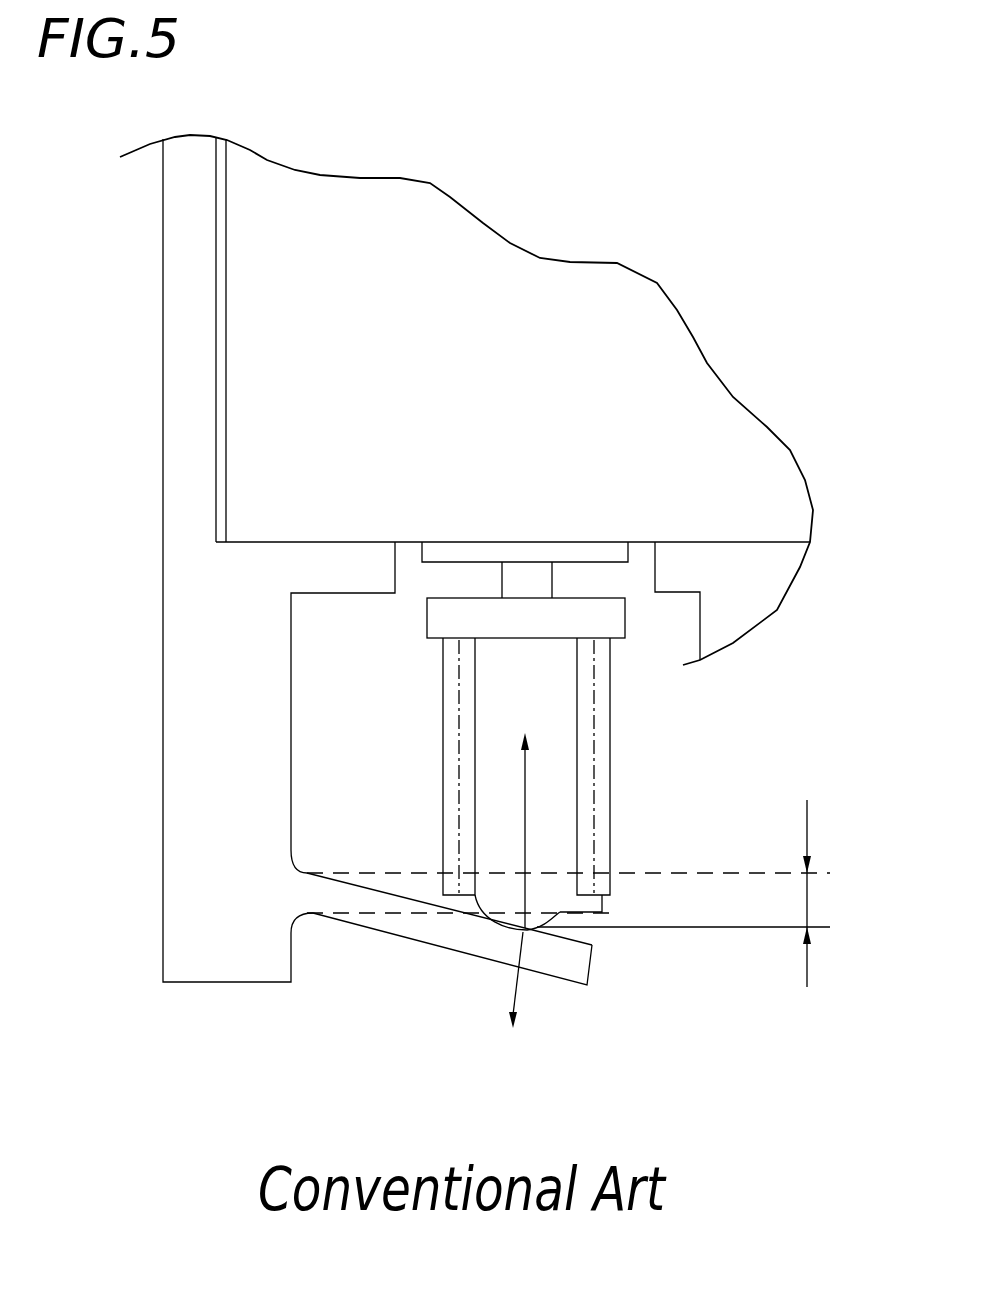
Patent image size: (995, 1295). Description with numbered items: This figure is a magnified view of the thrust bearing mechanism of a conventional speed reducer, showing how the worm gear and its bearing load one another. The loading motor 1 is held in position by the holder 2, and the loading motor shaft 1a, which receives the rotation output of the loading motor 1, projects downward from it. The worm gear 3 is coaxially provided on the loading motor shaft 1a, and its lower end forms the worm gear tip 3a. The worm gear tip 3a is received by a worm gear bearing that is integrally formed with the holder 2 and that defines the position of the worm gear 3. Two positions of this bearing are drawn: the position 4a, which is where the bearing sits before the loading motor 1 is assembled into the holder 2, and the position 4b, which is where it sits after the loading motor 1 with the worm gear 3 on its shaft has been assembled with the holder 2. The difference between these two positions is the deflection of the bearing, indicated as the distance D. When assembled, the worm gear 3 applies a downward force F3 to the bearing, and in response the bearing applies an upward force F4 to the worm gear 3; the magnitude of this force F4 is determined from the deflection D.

The loading motor 1 is at (663, 370).
The loading motor shaft 1a is at (522, 577).
The holder 2 is at (180, 328).
The worm gear 3 is at (558, 767).
The worm gear tip 3a is at (532, 932).
The position of worm gear bearing before assembly 4a is at (403, 882).
The position of worm gear bearing after assembly 4b is at (420, 933).
The force applied by worm gear to worm gear bearing F3 is at (496, 980).
The force applied by worm gear bearing to worm gear F4 is at (523, 782).
The deflection distance D is at (692, 893).